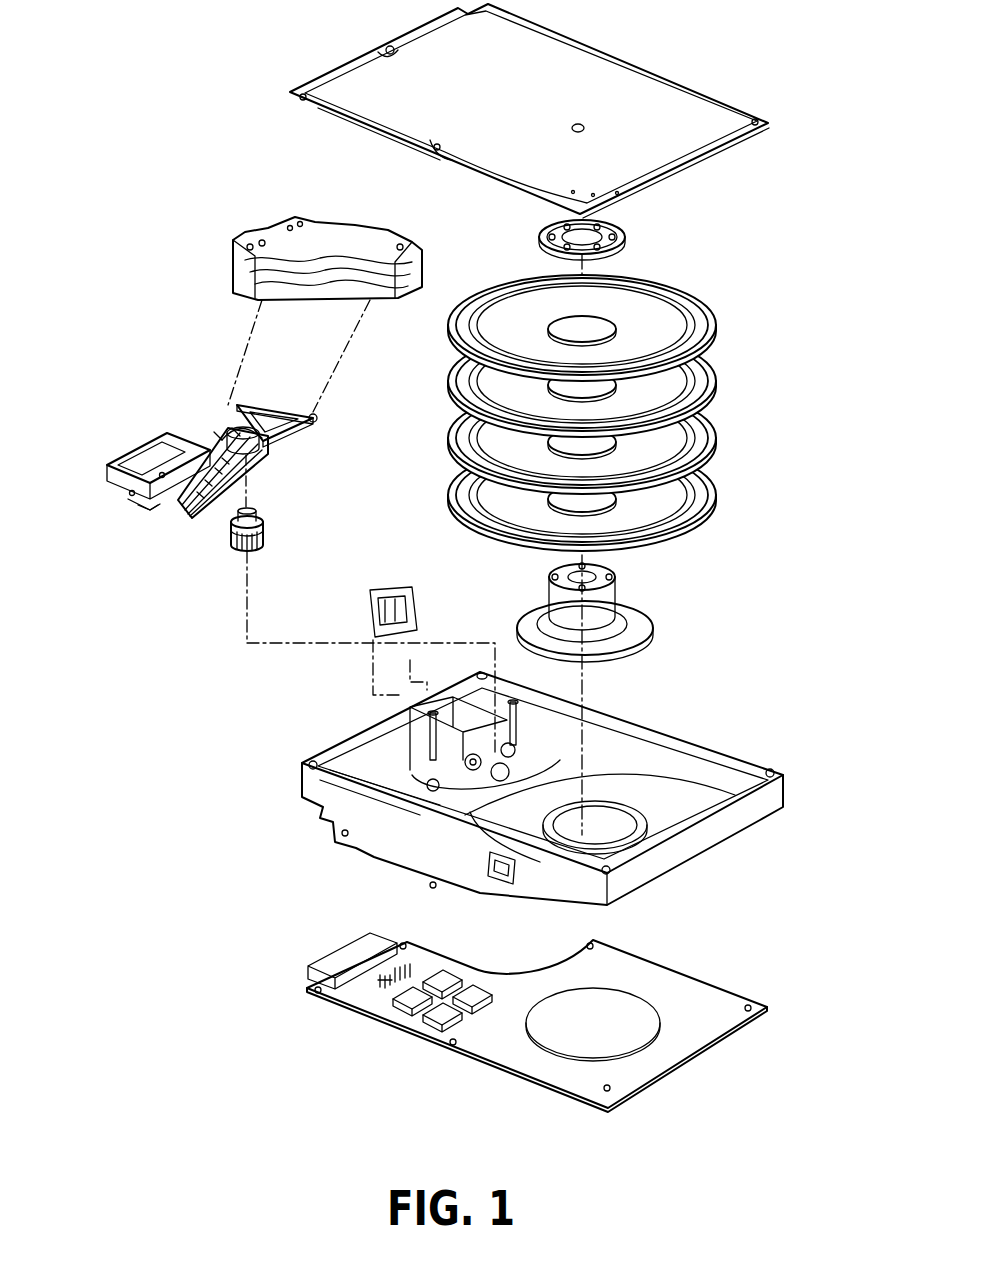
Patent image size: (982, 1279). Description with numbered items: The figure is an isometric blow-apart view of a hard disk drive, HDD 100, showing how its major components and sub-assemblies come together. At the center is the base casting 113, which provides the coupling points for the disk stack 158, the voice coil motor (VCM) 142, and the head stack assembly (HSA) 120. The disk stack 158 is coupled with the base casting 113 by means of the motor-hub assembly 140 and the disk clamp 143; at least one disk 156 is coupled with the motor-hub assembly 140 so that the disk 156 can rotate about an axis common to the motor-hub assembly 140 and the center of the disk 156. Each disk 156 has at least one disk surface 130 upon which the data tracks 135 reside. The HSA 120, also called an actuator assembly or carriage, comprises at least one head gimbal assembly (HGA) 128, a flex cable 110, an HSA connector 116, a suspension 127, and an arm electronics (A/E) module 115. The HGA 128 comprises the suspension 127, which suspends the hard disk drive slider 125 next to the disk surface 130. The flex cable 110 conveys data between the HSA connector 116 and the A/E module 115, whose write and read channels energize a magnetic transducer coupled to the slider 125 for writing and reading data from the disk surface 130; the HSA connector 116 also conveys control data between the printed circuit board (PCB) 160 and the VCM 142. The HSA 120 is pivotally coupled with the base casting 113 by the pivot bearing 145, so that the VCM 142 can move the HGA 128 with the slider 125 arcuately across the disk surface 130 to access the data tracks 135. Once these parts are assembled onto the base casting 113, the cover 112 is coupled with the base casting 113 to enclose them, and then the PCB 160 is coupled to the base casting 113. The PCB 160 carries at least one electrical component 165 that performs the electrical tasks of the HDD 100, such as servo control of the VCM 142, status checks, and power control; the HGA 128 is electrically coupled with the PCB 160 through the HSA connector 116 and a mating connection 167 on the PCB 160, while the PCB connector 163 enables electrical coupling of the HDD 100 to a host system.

The HDD 100 is at (788, 15).
The flex cable 110 is at (179, 423).
The cover 112 is at (607, 96).
The base casting 113 is at (303, 796).
The arm electronics (A/E) module 115 is at (212, 432).
The HSA connector 116 is at (104, 539).
The head stack assembly (HSA) 120 is at (125, 493).
The hard disk drive slider 125 is at (175, 512).
The suspension 127 is at (178, 468).
The head gimbal assembly (HGA) 128 is at (220, 498).
The disk surface 130 is at (607, 378).
The data tracks 135 is at (507, 297).
The motor-hub assembly 140 is at (653, 620).
The voice coil motor (VCM) 142 is at (230, 410).
The disk clamp 143 is at (545, 228).
The pivot bearing 145 is at (230, 550).
The disk 156 is at (445, 492).
The disk stack 158 is at (632, 378).
The printed circuit board (PCB) 160 is at (461, 1013).
The PCB connector 163 is at (350, 952).
The electrical component 165 is at (440, 1018).
The mating connection 167 is at (380, 982).